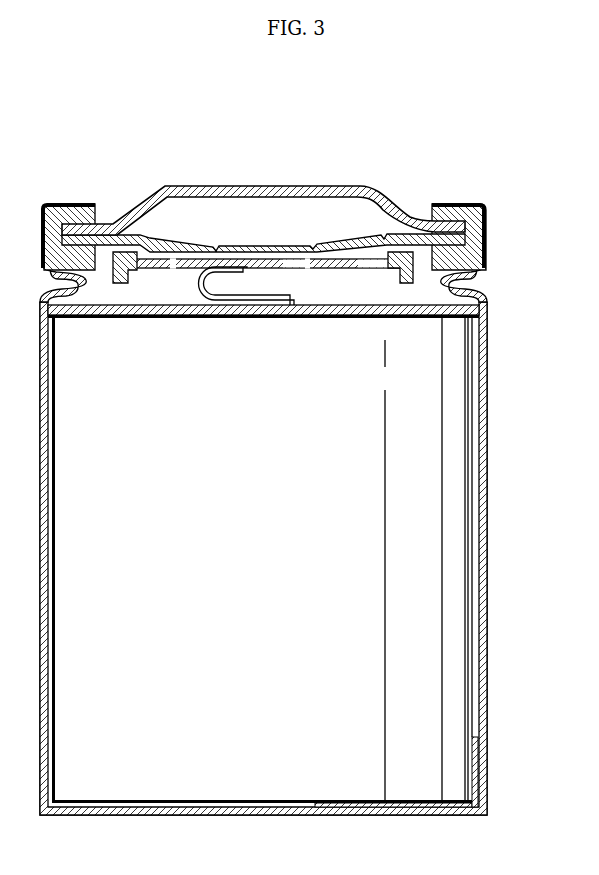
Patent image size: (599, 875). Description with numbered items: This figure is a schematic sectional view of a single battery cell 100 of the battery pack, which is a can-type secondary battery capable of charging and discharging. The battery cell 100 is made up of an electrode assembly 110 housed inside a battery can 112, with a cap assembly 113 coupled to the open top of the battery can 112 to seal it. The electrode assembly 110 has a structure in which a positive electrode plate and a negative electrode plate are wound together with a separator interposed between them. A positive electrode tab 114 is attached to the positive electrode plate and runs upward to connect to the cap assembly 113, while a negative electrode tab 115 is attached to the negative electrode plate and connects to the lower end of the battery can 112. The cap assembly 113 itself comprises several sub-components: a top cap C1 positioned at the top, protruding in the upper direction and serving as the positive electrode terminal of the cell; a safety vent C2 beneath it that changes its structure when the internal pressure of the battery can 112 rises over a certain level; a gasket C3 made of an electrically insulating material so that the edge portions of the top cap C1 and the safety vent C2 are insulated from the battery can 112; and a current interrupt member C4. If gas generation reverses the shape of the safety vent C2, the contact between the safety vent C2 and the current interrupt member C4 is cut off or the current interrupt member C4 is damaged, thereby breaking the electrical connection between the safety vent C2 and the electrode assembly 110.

The battery cell 100 is at (494, 133).
The electrode assembly 110 is at (448, 419).
The battery can 112 is at (487, 484).
The cap assembly 113 is at (467, 142).
The positive electrode tab 114 is at (196, 285).
The negative electrode tab 115 is at (480, 760).
The top cap C1 is at (325, 186).
The safety vent C2 is at (343, 238).
The gasket C3 is at (455, 203).
The current interrupt member C4 is at (362, 238).